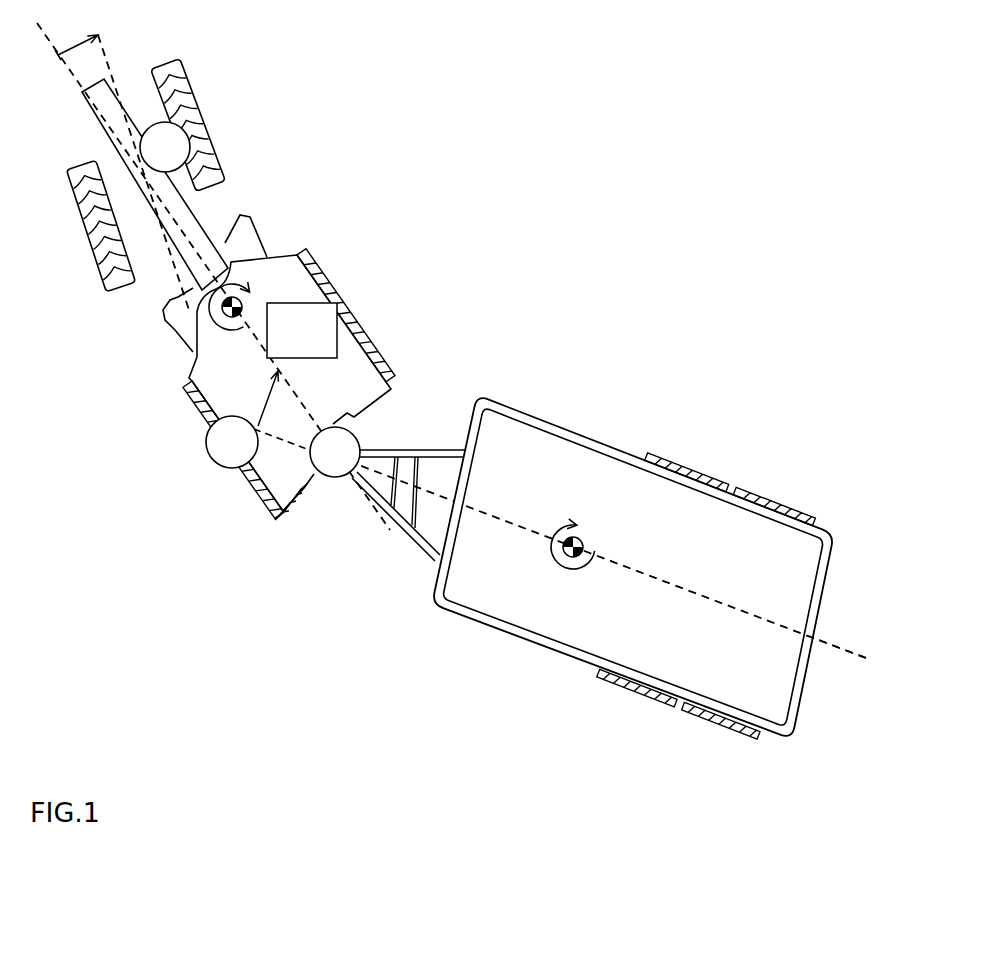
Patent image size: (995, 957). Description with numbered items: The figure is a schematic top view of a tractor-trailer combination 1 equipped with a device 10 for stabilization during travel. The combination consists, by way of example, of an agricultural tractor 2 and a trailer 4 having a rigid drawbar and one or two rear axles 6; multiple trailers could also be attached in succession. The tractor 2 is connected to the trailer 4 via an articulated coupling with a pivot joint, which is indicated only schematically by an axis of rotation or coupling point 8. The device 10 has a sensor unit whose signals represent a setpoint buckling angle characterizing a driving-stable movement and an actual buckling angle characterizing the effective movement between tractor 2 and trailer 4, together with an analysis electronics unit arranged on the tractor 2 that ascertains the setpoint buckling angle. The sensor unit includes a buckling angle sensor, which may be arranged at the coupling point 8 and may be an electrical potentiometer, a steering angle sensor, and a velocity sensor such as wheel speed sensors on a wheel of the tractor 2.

The tractor-trailer combination 1 is at (465, 138).
The tractor 2 is at (136, 340).
The trailer 4 is at (531, 669).
The rear axles 6 is at (753, 446).
The coupling point 8 is at (350, 478).
The device for stabilization 10 is at (419, 291).